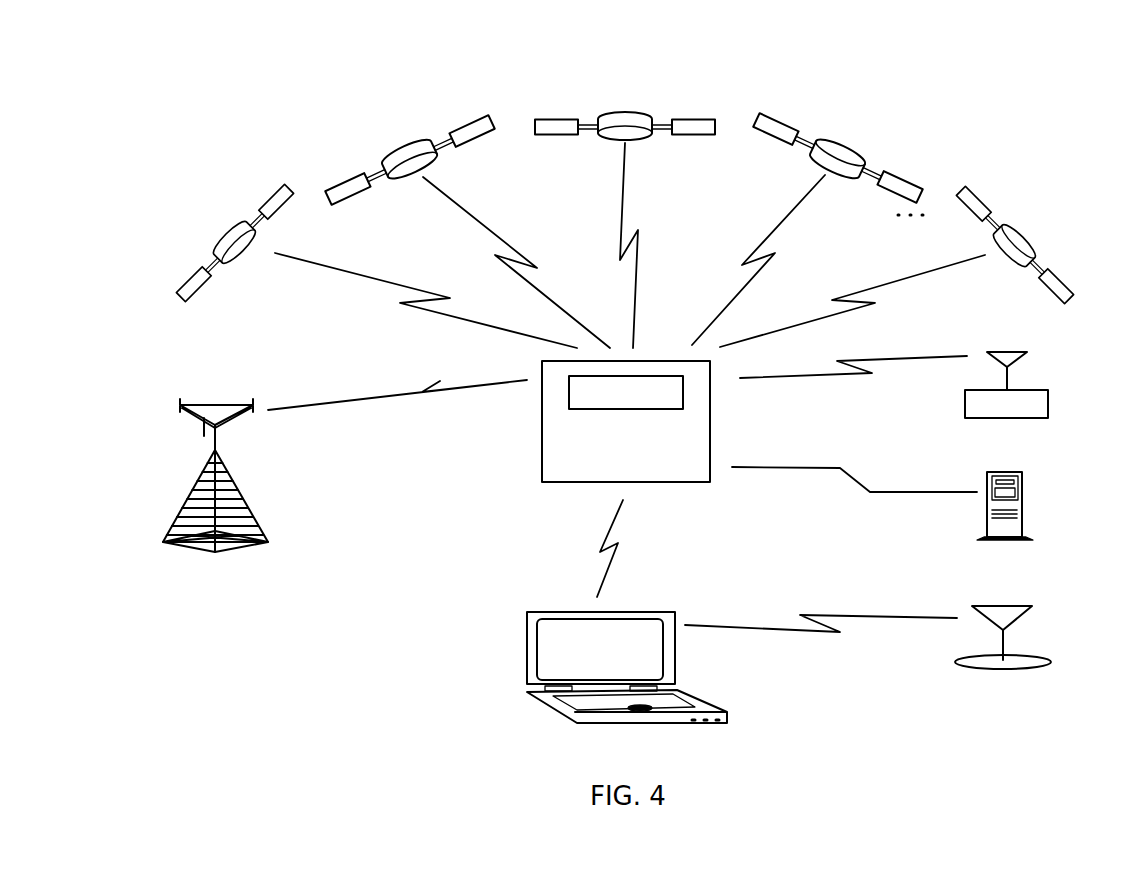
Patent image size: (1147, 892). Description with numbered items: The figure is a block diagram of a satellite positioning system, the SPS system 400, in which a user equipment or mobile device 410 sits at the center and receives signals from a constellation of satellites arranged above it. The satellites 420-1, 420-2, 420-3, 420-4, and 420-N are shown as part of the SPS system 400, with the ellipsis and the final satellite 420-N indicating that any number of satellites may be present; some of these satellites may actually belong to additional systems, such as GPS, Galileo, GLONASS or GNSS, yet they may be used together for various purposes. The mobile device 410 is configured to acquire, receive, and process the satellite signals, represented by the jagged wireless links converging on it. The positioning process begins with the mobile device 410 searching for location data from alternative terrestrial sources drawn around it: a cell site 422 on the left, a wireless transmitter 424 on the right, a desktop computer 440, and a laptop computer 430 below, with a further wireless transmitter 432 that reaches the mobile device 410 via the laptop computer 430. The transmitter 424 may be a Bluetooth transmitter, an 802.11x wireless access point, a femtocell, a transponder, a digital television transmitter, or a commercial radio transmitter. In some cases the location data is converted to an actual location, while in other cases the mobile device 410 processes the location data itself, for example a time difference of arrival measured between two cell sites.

The SPS system 400 is at (265, 84).
The mobile device 410 is at (565, 485).
The satellite 420-1 is at (222, 223).
The satellite 420-2 is at (408, 142).
The satellite 420-3 is at (628, 112).
The satellite 420-4 is at (848, 141).
The satellite 420-N is at (1032, 232).
The cell site 422 is at (242, 489).
The wireless transmitter 424 is at (1023, 389).
The laptop computer 430 is at (552, 715).
The wireless transmitter 432 is at (1025, 654).
The desktop computer 440 is at (1002, 472).